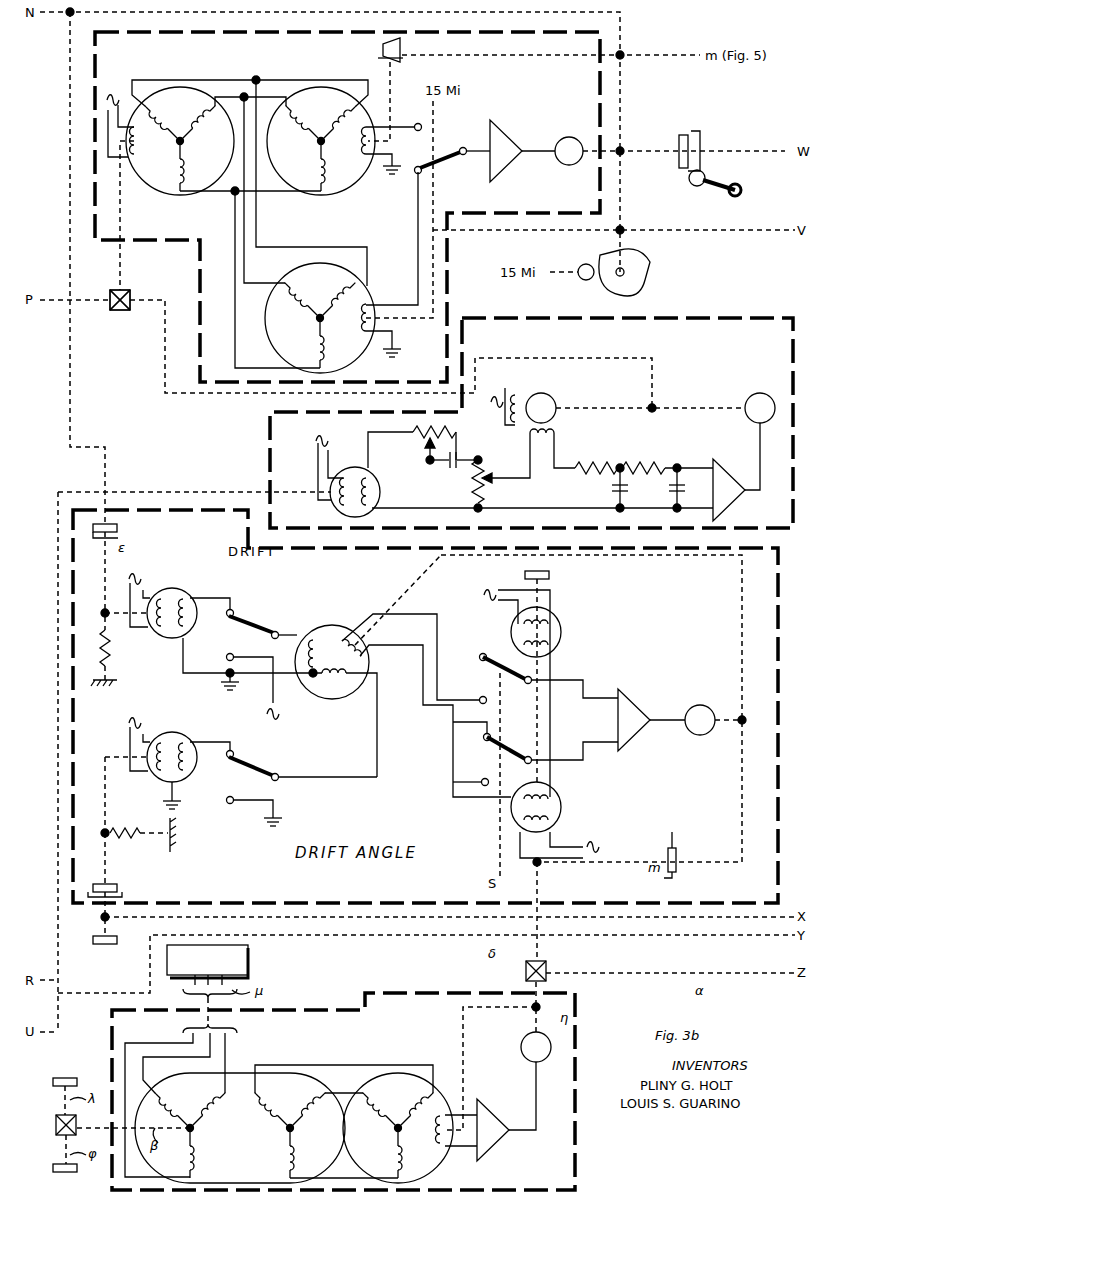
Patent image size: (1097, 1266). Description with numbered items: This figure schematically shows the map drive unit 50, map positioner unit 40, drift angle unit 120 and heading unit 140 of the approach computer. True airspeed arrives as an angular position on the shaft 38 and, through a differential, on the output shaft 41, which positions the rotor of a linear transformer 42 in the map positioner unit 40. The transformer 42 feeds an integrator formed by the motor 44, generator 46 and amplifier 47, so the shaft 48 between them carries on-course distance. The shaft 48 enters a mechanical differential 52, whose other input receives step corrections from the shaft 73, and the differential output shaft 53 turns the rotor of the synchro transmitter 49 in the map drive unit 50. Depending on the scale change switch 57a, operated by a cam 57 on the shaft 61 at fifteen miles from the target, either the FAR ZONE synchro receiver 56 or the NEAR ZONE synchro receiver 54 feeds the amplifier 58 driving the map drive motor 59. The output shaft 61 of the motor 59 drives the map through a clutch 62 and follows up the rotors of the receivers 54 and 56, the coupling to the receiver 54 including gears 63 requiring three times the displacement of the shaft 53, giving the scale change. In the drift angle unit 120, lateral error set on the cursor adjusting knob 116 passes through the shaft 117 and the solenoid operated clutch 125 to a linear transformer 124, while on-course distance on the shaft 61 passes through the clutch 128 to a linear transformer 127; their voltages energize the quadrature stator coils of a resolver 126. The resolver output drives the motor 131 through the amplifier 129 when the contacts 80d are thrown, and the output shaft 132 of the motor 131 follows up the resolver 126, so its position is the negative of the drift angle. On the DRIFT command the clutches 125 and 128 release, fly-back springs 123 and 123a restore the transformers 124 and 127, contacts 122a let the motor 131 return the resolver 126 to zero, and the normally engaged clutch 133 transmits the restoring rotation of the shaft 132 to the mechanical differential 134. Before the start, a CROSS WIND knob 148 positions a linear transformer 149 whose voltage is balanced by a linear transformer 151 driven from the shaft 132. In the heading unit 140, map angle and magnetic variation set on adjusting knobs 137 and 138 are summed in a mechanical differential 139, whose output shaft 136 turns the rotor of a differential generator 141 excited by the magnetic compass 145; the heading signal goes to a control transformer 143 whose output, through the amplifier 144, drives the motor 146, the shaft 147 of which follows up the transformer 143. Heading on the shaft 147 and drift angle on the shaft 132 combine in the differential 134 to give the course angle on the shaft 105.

The map drive unit 50 is at (83, 112).
The output shaft 61 is at (630, 12).
The synchro transmitter 49 is at (163, 196).
The NEAR ZONE synchro receiver 54 is at (345, 196).
The FAR ZONE synchro receiver 56 is at (366, 282).
The gears 63 is at (381, 47).
The scale change switch 57a is at (428, 172).
The amplifier 58 is at (502, 120).
The map drive motor 59 is at (583, 127).
The clutch 62 is at (692, 136).
The cam 57 is at (642, 258).
The differential output shaft 53 is at (125, 265).
The mechanical differential 52 is at (125, 310).
The output shaft 73 is at (110, 298).
The shaft 48 is at (164, 372).
The map positioner unit 40 is at (260, 425).
The generator 46 is at (552, 396).
The motor 44 is at (760, 393).
The amplifier 47 is at (735, 500).
The linear transformer 42 is at (382, 496).
The output shaft 41 is at (239, 492).
The shaft 38 is at (106, 995).
The drift angle unit 120 is at (190, 504).
The solenoid operated clutch 128 is at (120, 530).
The linear transformer 127 is at (188, 596).
The contacts 122a is at (236, 626).
The resolver 126 is at (322, 620).
The fly-back spring 123a is at (110, 657).
The linear transformer 124 is at (188, 740).
The shaft 117 is at (108, 798).
The fly-back spring 123 is at (126, 836).
The solenoid operated clutch 125 is at (120, 888).
The cursor adjusting knob 116 is at (94, 939).
The output shaft 132 is at (742, 590).
The CROSS WIND knob 148 is at (552, 575).
The linear transformer 149 is at (560, 620).
The contacts 80d is at (520, 690).
The amplifier 129 is at (636, 700).
The motor 131 is at (700, 736).
The linear transformer 151 is at (560, 813).
The clutch 133 is at (672, 832).
The mechanical differential 134 is at (500, 952).
The input shaft 105 is at (758, 973).
The magnetic compass 145 is at (252, 956).
The heading unit 140 is at (592, 1013).
The shaft 147 is at (460, 1013).
The motor 146 is at (555, 1022).
The amplifier 144 is at (500, 1140).
The differential generator 141 is at (252, 1066).
The control transformer 143 is at (440, 1166).
The adjusting knob 137 is at (65, 1078).
The mechanical differential 139 is at (56, 1126).
The output shaft 136 is at (110, 1128).
The adjusting knob 138 is at (56, 1171).